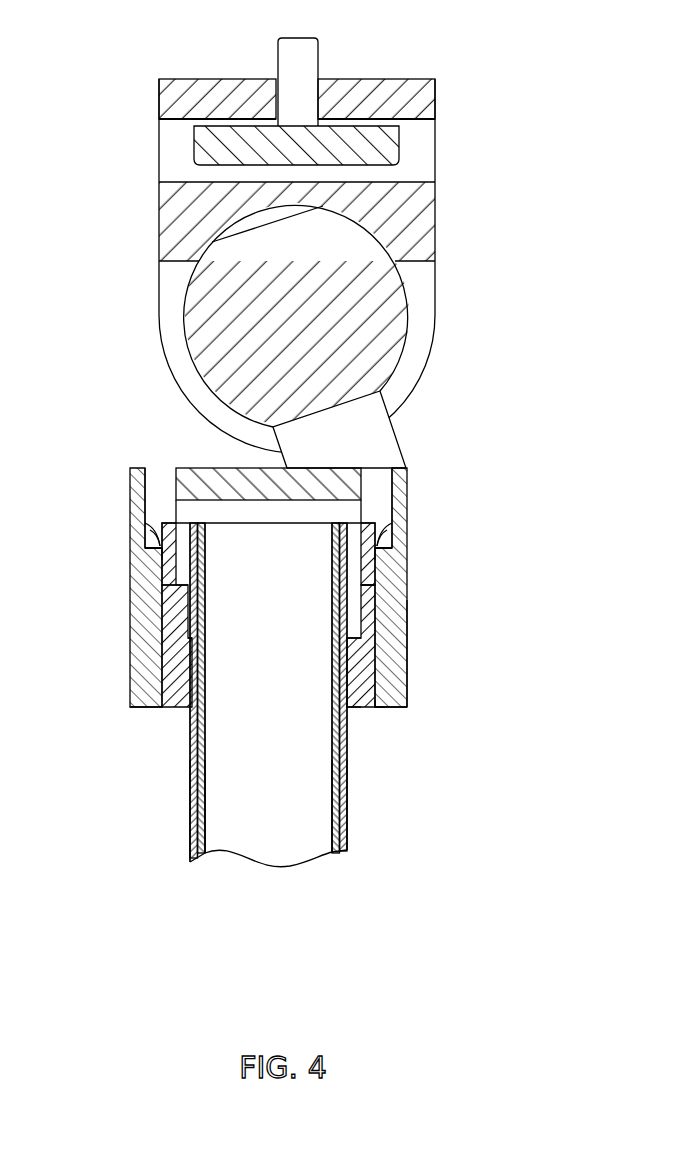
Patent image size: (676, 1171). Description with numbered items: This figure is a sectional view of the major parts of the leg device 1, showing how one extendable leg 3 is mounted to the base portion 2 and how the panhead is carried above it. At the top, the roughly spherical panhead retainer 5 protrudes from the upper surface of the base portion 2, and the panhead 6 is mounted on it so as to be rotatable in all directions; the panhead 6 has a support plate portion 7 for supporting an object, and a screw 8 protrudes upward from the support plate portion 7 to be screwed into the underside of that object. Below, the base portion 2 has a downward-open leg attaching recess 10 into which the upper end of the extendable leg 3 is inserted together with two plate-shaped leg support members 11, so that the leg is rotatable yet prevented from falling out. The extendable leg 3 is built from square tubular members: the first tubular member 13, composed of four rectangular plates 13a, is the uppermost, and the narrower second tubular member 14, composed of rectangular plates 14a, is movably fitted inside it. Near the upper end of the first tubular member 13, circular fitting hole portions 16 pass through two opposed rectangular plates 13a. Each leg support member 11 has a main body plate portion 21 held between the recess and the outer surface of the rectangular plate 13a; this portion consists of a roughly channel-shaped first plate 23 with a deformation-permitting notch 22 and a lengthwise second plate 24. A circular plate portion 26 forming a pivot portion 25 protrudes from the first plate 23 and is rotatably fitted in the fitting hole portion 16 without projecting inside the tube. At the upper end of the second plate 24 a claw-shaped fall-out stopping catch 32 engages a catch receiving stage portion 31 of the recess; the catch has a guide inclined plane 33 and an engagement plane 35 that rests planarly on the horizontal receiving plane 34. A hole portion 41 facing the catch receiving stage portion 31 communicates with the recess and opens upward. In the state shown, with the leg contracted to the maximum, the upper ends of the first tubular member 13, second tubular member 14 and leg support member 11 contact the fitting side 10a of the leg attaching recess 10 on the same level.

The leg device 1 is at (340, 243).
The base portion 2 is at (280, 588).
The extendable leg 3 is at (268, 709).
The panhead retainer 5 is at (405, 318).
The panhead 6 is at (409, 71).
The support plate portion 7 is at (218, 80).
The screw 8 is at (319, 54).
The leg attaching recess 10 is at (294, 583).
The fitting side 10a is at (377, 488).
The leg support member 11 is at (172, 716).
The first tubular member 13 is at (268, 692).
The rectangular plate 13a is at (191, 803).
The second tubular member 14 is at (298, 709).
The rectangular plate 14a is at (205, 853).
The fitting hole portion 16 is at (180, 645).
The main body plate portion 21 is at (404, 698).
The deformation-permitting notch 22 is at (376, 573).
The first plate 23 is at (353, 704).
The second plate 24 is at (376, 708).
The pivot portion 25 is at (176, 598).
The circular plate portion 26 is at (180, 624).
The catch receiving stage portion 31 is at (155, 546).
The fall-out stopping catch 32 is at (150, 543).
The guide inclined plane 33 is at (148, 535).
The receiving plane 34 is at (137, 548).
The engagement plane 35 is at (160, 552).
The hole portion 41 is at (158, 492).